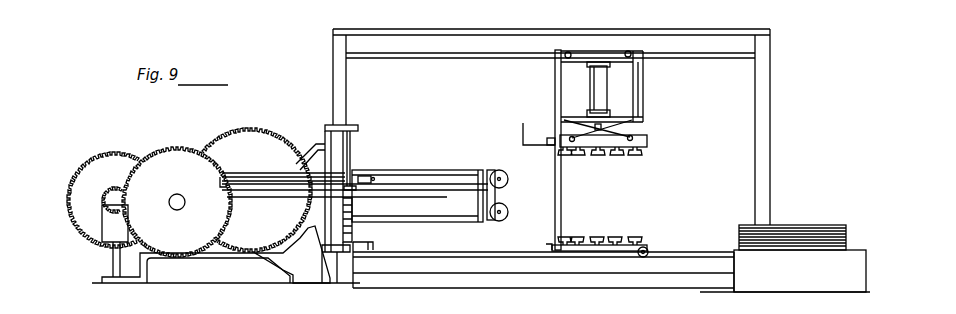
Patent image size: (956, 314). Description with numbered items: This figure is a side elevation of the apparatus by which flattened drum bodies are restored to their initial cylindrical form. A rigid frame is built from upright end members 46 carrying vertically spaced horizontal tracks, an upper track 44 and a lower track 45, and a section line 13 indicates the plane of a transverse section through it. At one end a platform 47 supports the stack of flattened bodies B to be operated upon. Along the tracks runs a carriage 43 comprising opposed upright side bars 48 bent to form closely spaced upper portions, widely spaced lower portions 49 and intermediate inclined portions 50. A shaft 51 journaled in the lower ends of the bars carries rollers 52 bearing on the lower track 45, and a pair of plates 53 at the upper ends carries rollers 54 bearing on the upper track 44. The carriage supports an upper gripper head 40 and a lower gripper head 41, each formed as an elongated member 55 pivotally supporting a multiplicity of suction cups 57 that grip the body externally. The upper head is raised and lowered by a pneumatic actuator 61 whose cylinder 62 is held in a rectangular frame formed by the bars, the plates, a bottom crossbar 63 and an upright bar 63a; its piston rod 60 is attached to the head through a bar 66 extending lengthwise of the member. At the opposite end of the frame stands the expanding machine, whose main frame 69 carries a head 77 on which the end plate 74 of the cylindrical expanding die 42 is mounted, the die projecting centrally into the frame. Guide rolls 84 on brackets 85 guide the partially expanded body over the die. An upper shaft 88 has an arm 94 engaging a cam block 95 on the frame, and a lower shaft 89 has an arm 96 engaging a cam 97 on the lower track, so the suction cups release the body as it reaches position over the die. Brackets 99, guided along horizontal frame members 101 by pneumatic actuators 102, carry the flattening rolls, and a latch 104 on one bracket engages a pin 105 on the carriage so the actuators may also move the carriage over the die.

The section line 13 is at (630, 22).
The upper gripper head 40 is at (624, 139).
The lower gripper head 41 is at (656, 243).
The expanding die 42 is at (442, 167).
The carriage 43 is at (548, 100).
The upper track 44 is at (524, 54).
The lower track 45 is at (506, 257).
The upright end members 46 is at (333, 88).
The platform 47 is at (848, 257).
The upright side bars 48 is at (555, 104).
The lower portions 49 is at (555, 219).
The intermediate inclined portions 50 is at (555, 152).
The shaft 51 is at (556, 253).
The rollers 52 is at (560, 252).
The plates 53 is at (643, 70).
The rollers 54 is at (570, 52).
The elongated member 55 is at (598, 58).
The suction cups 57 is at (598, 158).
The piston rod 60 is at (597, 125).
The pneumatic actuator 61 is at (603, 87).
The cylinder 62 is at (591, 89).
The bottom crossbar 63 is at (633, 118).
The upright bar 63a is at (643, 86).
The bar 66 is at (620, 130).
The main frame 69 is at (316, 272).
The end plate 74 is at (351, 147).
The head 77 is at (328, 138).
The guide rolls 84 is at (506, 206).
The brackets 85 is at (497, 184).
The upper shaft 88 is at (544, 133).
The lower shaft 89 is at (555, 237).
The arm 94 is at (523, 129).
The cam block 95 is at (358, 128).
The arm 96 is at (546, 247).
The cam 97 is at (373, 245).
The brackets 99 is at (358, 199).
The horizontal frame members 101 is at (452, 197).
The pneumatic actuators 102 is at (260, 176).
The latch 104 is at (370, 176).
The pin 105 is at (561, 195).
The flattened bodies B is at (812, 232).